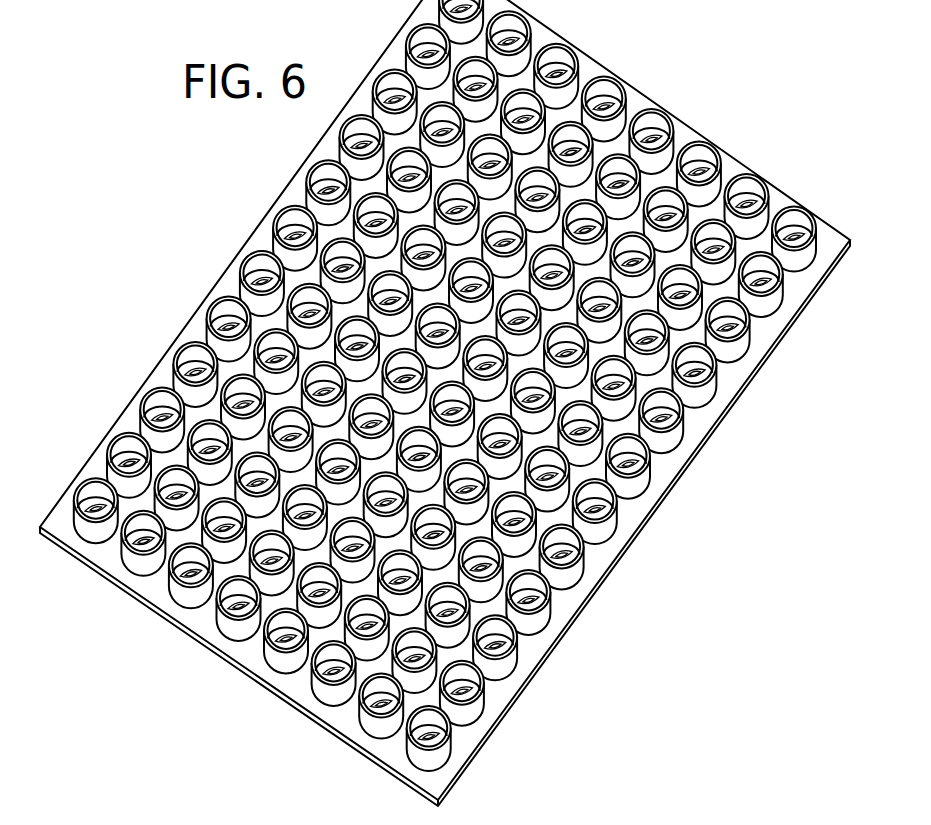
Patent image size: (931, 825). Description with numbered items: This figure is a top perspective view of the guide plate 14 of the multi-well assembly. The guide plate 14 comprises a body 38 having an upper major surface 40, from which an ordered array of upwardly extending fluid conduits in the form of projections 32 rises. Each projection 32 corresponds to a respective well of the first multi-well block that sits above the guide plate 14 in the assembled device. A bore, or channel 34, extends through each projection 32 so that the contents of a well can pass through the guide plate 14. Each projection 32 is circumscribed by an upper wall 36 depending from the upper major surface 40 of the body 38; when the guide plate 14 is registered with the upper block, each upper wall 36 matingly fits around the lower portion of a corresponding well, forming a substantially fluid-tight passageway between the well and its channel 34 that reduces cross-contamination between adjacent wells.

The guide plate 14 is at (736, 158).
The projection 32 is at (467, 690).
The channel 34 is at (436, 738).
The upper wall 36 is at (484, 690).
The body 38 is at (638, 508).
The upper major surface 40 is at (746, 377).